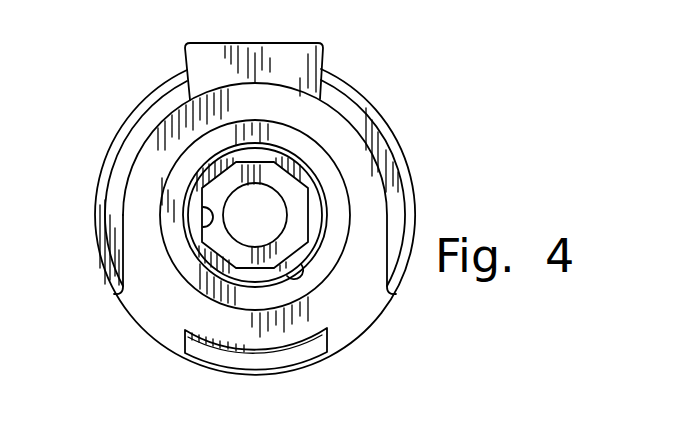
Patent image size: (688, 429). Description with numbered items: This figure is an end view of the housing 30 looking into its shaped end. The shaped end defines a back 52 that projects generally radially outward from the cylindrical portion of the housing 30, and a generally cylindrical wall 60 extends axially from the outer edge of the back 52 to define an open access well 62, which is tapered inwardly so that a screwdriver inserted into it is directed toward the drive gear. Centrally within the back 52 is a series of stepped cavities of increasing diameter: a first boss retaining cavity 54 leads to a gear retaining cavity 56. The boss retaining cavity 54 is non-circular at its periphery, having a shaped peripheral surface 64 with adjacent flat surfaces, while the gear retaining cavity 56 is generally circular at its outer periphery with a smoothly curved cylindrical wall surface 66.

The housing 30 is at (122, 104).
The back 52 is at (360, 293).
The boss retaining cavity 54 is at (287, 177).
The gear retaining cavity 56 is at (317, 213).
The cylindrical wall 60 is at (95, 200).
The access well 62 is at (312, 59).
The shaped peripheral surface 64 is at (210, 217).
The cylindrical wall surface 66 is at (300, 272).